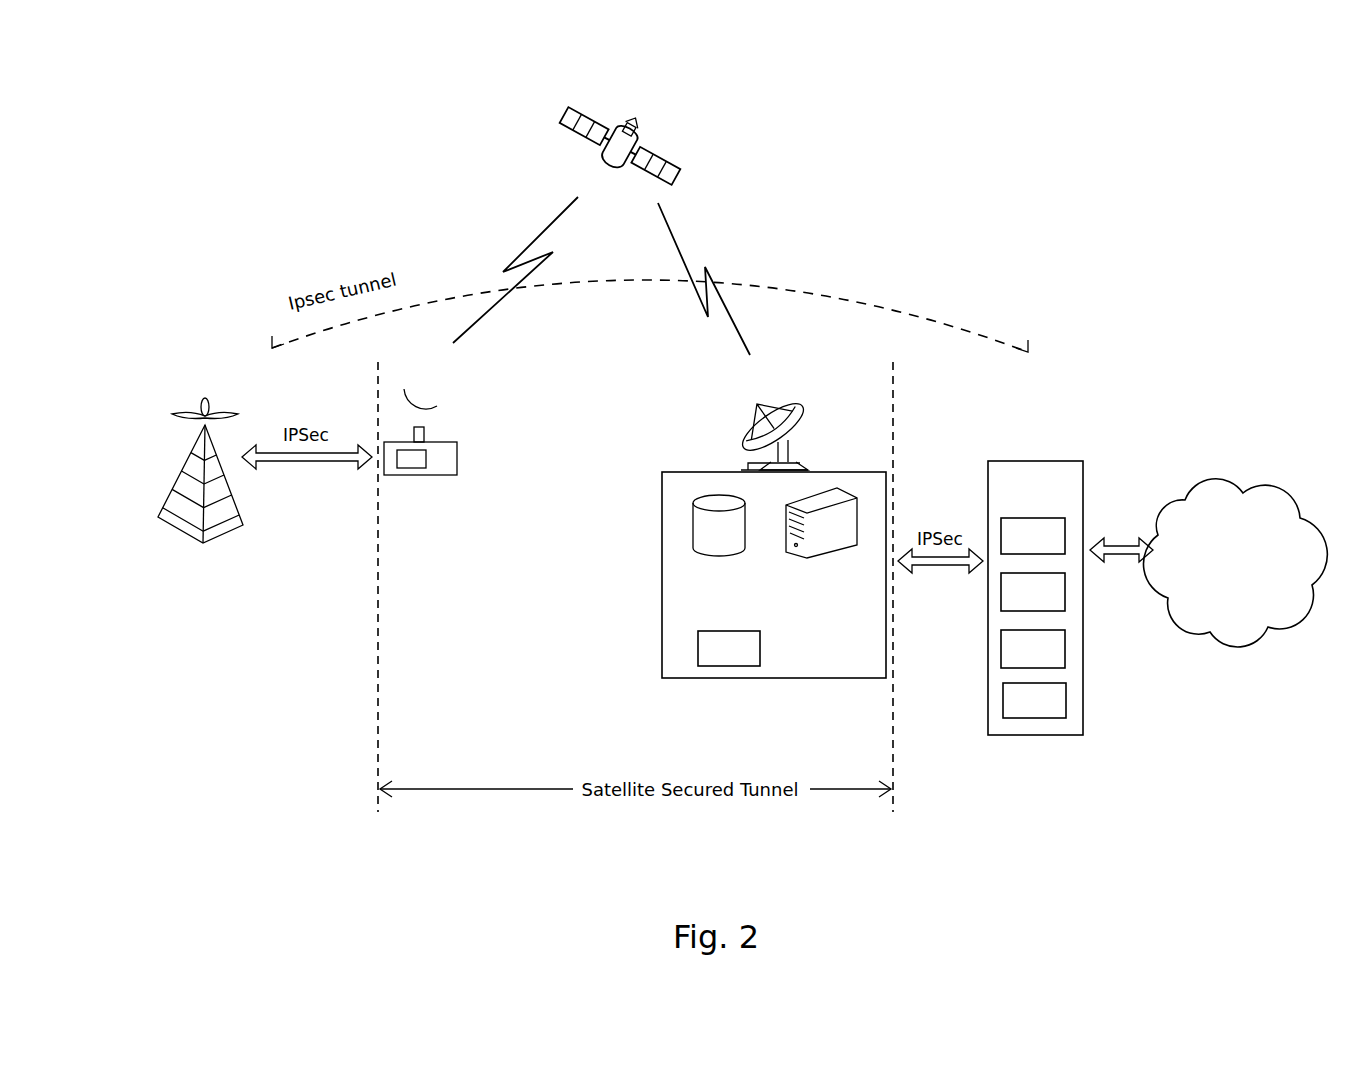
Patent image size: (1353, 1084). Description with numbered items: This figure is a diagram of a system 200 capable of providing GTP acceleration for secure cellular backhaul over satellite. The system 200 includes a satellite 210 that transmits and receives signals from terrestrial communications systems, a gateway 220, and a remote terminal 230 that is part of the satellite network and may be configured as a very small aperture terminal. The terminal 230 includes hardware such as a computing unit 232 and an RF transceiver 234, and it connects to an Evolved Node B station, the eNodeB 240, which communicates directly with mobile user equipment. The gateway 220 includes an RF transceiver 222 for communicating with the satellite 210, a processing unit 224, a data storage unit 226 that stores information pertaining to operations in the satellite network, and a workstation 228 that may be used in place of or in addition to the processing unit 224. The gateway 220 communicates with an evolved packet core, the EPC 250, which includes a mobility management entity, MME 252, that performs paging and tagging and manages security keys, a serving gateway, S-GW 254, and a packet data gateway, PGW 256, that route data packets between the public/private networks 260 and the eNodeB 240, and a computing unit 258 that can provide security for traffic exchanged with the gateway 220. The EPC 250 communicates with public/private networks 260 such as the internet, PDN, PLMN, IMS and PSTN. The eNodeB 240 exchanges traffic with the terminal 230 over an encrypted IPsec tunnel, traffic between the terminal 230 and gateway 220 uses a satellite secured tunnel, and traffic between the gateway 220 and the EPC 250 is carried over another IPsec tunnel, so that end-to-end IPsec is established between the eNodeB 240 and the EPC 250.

The system 200 is at (1032, 95).
The satellite 210 is at (670, 160).
The gateway 220 is at (663, 472).
The radio frequency (RF) transceiver 222 is at (810, 410).
The processing unit 224 is at (722, 668).
The data storage unit 226 is at (727, 553).
The workstation 228 is at (833, 553).
The remote terminal 230 is at (458, 455).
The computing unit 232 is at (410, 470).
The RF transceiver 234 is at (430, 428).
The Evolved Node B (eNodeB) station 240 is at (180, 470).
The evolved packet core (EPC) 250 is at (1054, 461).
The mobility management entity (MME) 252 is at (1064, 710).
The serving gateway (S-GW) 254 is at (1064, 658).
The packet data gateway (PGW) 256 is at (1064, 605).
The computing unit 258 is at (1065, 518).
The public/private networks 260 is at (1210, 480).